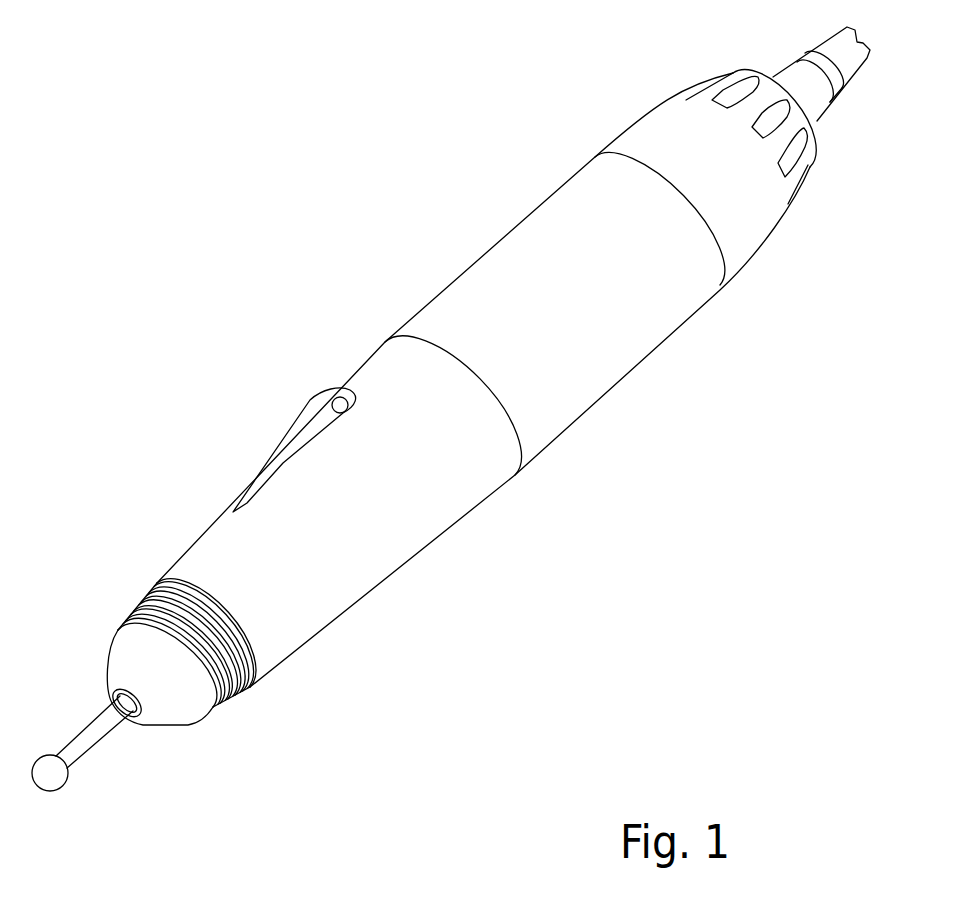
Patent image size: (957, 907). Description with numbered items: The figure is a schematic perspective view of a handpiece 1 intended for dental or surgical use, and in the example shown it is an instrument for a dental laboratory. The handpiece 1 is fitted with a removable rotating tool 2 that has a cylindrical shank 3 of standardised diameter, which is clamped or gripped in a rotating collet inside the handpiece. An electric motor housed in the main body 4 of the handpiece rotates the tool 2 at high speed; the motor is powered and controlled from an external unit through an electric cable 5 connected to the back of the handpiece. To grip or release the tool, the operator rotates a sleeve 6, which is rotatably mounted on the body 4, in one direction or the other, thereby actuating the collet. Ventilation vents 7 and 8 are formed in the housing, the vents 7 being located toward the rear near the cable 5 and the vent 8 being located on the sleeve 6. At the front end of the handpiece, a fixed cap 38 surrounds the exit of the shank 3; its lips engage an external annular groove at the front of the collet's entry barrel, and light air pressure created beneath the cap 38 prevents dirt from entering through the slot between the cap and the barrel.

The handpiece 1 is at (437, 222).
The rotating tool 2 is at (21, 747).
The cylindrical shank 3 is at (88, 743).
The main body 4 is at (628, 360).
The electric cable 5 is at (850, 57).
The sleeve 6 is at (395, 570).
The ventilation vent 7 is at (726, 93).
The ventilation vent 8 is at (340, 407).
The fixed cap 38 is at (118, 677).